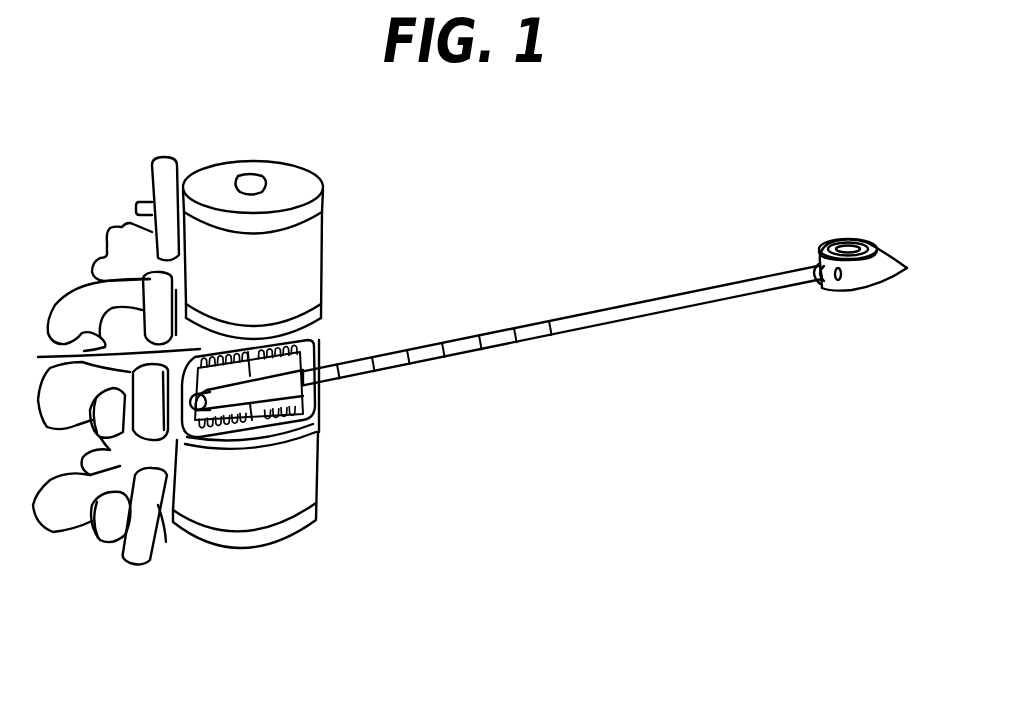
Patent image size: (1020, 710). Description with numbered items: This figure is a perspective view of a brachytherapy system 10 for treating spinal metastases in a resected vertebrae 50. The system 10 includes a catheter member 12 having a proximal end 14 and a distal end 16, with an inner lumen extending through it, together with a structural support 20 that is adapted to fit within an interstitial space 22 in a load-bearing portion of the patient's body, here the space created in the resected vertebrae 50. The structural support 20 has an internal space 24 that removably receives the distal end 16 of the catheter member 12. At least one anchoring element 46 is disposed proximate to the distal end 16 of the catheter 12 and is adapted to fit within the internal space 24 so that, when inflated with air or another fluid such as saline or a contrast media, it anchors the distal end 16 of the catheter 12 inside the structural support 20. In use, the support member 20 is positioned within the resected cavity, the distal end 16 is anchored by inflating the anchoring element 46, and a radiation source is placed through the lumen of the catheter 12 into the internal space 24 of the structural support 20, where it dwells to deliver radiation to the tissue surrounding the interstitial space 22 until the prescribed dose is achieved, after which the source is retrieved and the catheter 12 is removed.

The system 10 is at (145, 100).
The catheter member 12 is at (627, 310).
The proximal end 14 is at (857, 204).
The distal end 16 is at (304, 450).
The structural support 20 is at (320, 345).
The interstitial space 22 is at (274, 413).
The internal space 24 is at (210, 473).
The anchoring element 46 is at (248, 395).
The resected vertebrae 50 is at (102, 360).